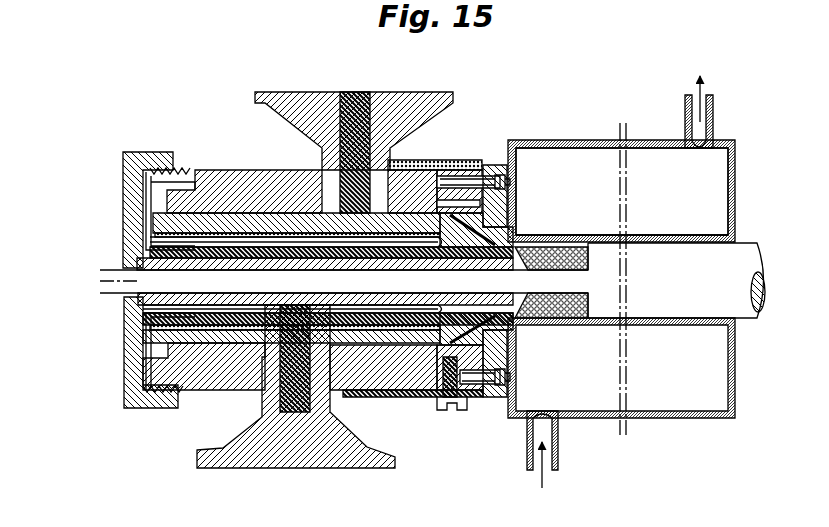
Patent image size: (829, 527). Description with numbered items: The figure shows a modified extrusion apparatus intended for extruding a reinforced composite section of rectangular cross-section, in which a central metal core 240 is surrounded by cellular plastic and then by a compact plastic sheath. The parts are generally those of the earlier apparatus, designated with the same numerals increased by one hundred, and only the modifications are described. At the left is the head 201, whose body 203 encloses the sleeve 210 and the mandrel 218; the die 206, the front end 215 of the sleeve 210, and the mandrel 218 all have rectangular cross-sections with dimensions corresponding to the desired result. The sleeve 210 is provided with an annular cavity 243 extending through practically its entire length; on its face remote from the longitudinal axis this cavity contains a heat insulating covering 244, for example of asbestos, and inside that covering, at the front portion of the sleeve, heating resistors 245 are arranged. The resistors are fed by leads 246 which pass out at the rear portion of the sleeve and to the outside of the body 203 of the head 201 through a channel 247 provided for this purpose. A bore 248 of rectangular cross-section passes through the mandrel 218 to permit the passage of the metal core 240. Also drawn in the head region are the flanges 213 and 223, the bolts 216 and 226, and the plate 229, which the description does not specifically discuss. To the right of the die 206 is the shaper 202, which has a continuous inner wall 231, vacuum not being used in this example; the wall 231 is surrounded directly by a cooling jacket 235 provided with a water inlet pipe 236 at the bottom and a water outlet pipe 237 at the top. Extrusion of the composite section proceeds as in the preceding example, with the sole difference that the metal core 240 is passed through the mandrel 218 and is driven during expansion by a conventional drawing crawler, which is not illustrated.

The head 201 is at (255, 166).
The shaper 202 is at (680, 422).
The body 203 is at (293, 183).
The die 206 is at (513, 220).
The sleeve 210 is at (300, 223).
The upper flange 213 is at (402, 118).
The front end of the sleeve 215 is at (523, 325).
The bolt 216 is at (488, 386).
The mandrel 218 is at (242, 300).
The lower flange 223 is at (236, 468).
The bolt 226 is at (458, 207).
The plate 229 is at (358, 398).
The inner wall 231 is at (678, 235).
The cooling jacket 235 is at (712, 202).
The water inlet pipe 236 is at (558, 447).
The water outlet pipe 237 is at (713, 120).
The metal core 240 is at (118, 284).
The annular cavity 243 is at (215, 242).
The heat insulating covering 244 is at (173, 228).
The heating resistors 245 is at (396, 236).
The leads 246 is at (190, 166).
The channel 247 is at (196, 172).
The bore 248 is at (170, 267).